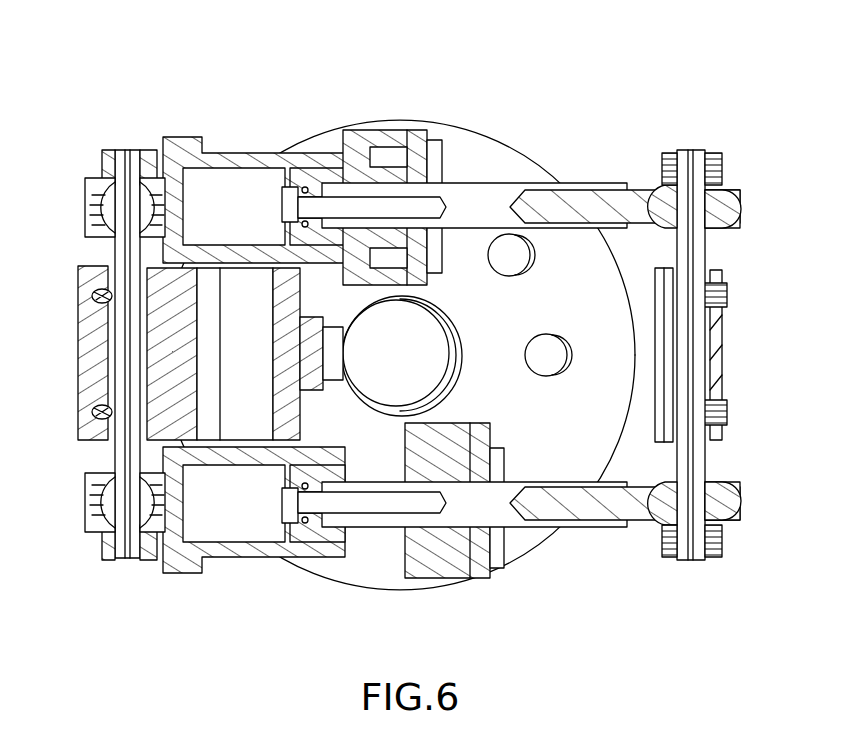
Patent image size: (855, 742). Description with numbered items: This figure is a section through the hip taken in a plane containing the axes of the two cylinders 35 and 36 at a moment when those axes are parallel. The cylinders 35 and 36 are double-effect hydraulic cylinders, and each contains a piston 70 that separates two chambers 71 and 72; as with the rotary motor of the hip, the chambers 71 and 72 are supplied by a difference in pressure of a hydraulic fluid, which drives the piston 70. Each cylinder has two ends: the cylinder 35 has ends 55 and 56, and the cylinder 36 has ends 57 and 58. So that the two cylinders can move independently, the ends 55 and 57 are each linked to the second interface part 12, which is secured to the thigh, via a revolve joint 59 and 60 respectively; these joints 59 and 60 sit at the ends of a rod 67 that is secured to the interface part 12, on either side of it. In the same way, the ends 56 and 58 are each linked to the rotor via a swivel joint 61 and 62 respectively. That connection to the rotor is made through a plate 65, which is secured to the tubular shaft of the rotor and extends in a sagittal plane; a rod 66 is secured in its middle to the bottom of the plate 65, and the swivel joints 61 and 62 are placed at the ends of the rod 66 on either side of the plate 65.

The second interface part 12 is at (92, 348).
The cylinder 35 is at (458, 596).
The cylinder 36 is at (436, 104).
The end of cylinder 35 55 is at (180, 562).
The end of cylinder 35 56 is at (738, 512).
The end of cylinder 36 57 is at (170, 140).
The end of cylinder 36 58 is at (738, 198).
The revolve joint 59 is at (89, 545).
The revolve joint 60 is at (93, 168).
The swivel joint 61 is at (730, 470).
The swivel joint 62 is at (730, 173).
The plate 65 is at (718, 357).
The rod 66 is at (697, 262).
The rod 67 is at (117, 262).
The piston 70 is at (292, 180).
The chamber 71 is at (216, 220).
The chamber 72 is at (357, 173).